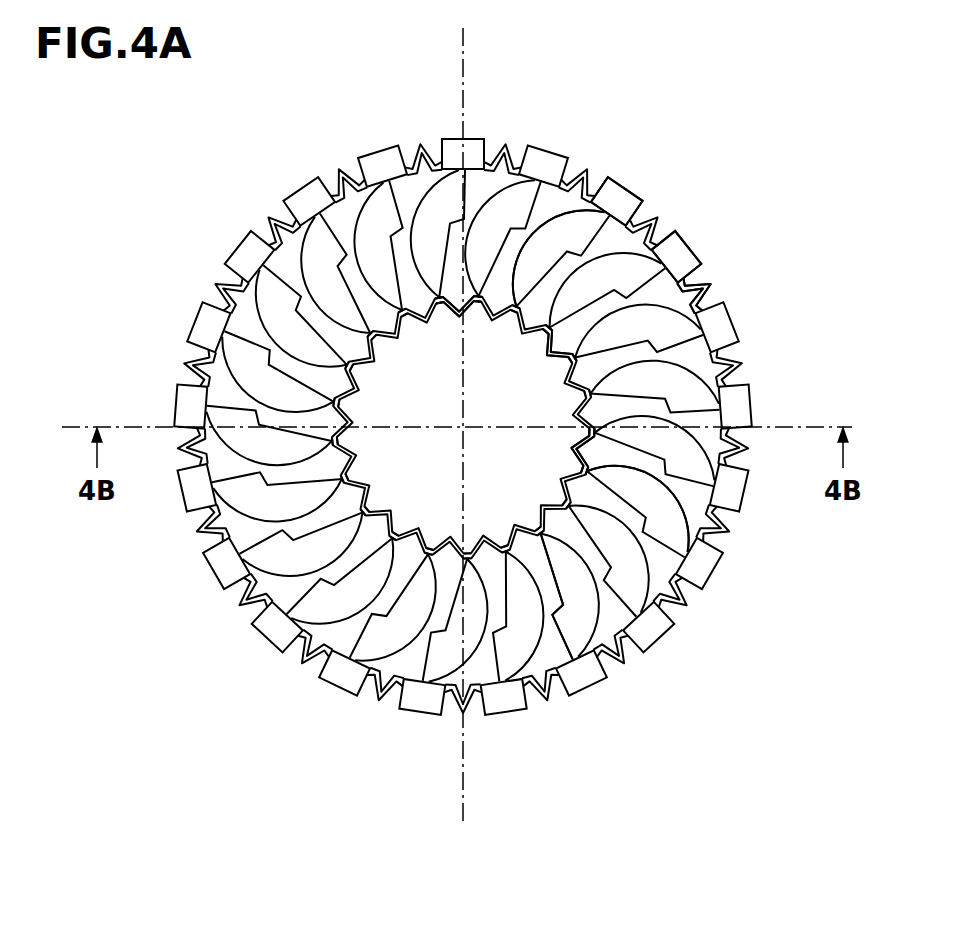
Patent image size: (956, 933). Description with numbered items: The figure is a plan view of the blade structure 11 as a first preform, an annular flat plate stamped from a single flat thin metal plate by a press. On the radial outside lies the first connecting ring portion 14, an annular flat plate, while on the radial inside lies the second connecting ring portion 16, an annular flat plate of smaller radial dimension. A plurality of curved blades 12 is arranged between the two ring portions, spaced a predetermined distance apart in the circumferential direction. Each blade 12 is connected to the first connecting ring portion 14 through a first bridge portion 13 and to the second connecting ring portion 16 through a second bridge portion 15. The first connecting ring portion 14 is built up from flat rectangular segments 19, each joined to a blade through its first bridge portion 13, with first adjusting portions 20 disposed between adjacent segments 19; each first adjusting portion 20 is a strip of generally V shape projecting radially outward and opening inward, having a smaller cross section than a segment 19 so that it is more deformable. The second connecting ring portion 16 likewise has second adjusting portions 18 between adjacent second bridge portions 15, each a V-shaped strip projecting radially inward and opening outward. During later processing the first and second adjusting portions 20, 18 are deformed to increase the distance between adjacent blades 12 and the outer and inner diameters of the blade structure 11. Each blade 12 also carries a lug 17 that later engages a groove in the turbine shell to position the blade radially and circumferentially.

The blade structure 11 is at (669, 123).
The blade 12 is at (550, 226).
The first bridge portion 13 is at (705, 556).
The first connecting ring portion 14 is at (637, 187).
The second bridge portion 15 is at (565, 358).
The second connecting ring portion 16 is at (447, 313).
The lug 17 is at (557, 617).
The second adjusting portion 18 is at (573, 443).
The segment 19 is at (695, 253).
The first adjusting portion 20 is at (708, 297).